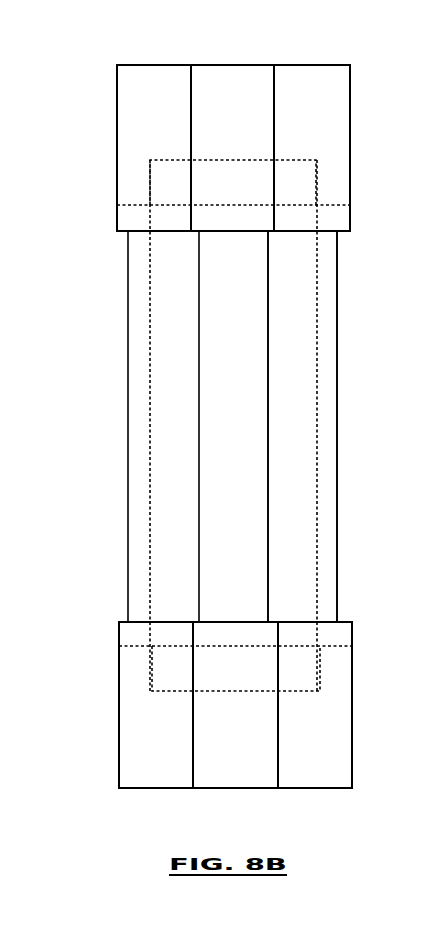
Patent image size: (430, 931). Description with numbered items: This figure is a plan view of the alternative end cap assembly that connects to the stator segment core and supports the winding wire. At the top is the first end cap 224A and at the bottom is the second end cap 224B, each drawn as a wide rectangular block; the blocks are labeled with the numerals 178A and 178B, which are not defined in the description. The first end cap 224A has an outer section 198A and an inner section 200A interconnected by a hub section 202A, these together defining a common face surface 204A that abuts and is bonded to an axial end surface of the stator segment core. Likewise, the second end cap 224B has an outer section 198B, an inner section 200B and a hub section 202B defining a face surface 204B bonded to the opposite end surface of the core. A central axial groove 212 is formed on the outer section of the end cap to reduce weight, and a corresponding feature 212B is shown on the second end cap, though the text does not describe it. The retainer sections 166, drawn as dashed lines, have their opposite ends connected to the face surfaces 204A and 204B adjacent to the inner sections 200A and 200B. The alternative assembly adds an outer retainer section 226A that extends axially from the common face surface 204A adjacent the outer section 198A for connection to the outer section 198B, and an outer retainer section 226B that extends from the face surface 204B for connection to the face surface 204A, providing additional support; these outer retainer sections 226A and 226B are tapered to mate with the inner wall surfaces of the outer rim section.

The retainer sections 166 is at (150, 440).
The upper end plate 178A is at (139, 65).
The lower end plate 178B is at (320, 788).
The outer section 198A is at (329, 138).
The outer section 198B is at (335, 720).
The inner section 200A is at (149, 172).
The inner section 200B is at (152, 670).
The hub section 202A is at (243, 213).
The hub section 202B is at (237, 629).
The common face surface 204A is at (338, 232).
The face surface 204B is at (328, 620).
The central axial groove 212 is at (207, 98).
The lower central section 212B is at (238, 770).
The first end cap 224A is at (208, 164).
The second end cap 224B is at (210, 479).
The outer retainer section 226A is at (163, 426).
The outer retainer section 226B is at (302, 426).